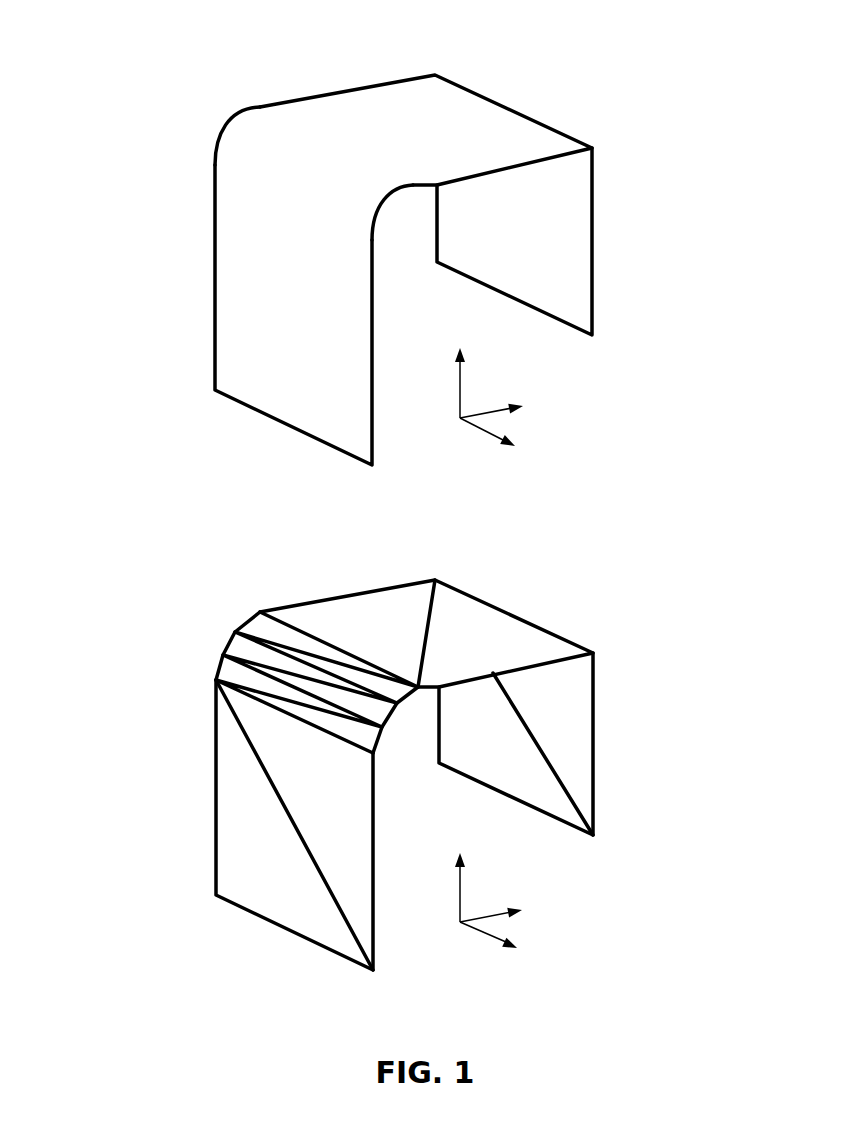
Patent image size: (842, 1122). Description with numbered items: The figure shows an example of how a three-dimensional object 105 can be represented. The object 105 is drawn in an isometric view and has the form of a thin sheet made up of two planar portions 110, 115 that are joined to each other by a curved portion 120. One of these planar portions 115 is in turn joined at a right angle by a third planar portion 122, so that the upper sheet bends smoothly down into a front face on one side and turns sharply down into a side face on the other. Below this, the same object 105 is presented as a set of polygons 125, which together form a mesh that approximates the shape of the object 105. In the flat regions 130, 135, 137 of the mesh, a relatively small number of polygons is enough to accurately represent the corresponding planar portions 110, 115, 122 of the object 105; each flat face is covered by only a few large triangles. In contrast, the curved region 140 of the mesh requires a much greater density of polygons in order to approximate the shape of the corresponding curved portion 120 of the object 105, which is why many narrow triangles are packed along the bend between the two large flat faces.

The three-dimensional object 105 is at (268, 53).
The planar portion 110 is at (228, 291).
The planar portion 115 is at (500, 120).
The curved portion 120 is at (372, 188).
The third planar portion 122 is at (592, 307).
The set of polygons 125 is at (229, 587).
The flat region 130 is at (228, 836).
The flat region 135 is at (500, 623).
The flat region 137 is at (593, 807).
The curved region 140 is at (385, 695).